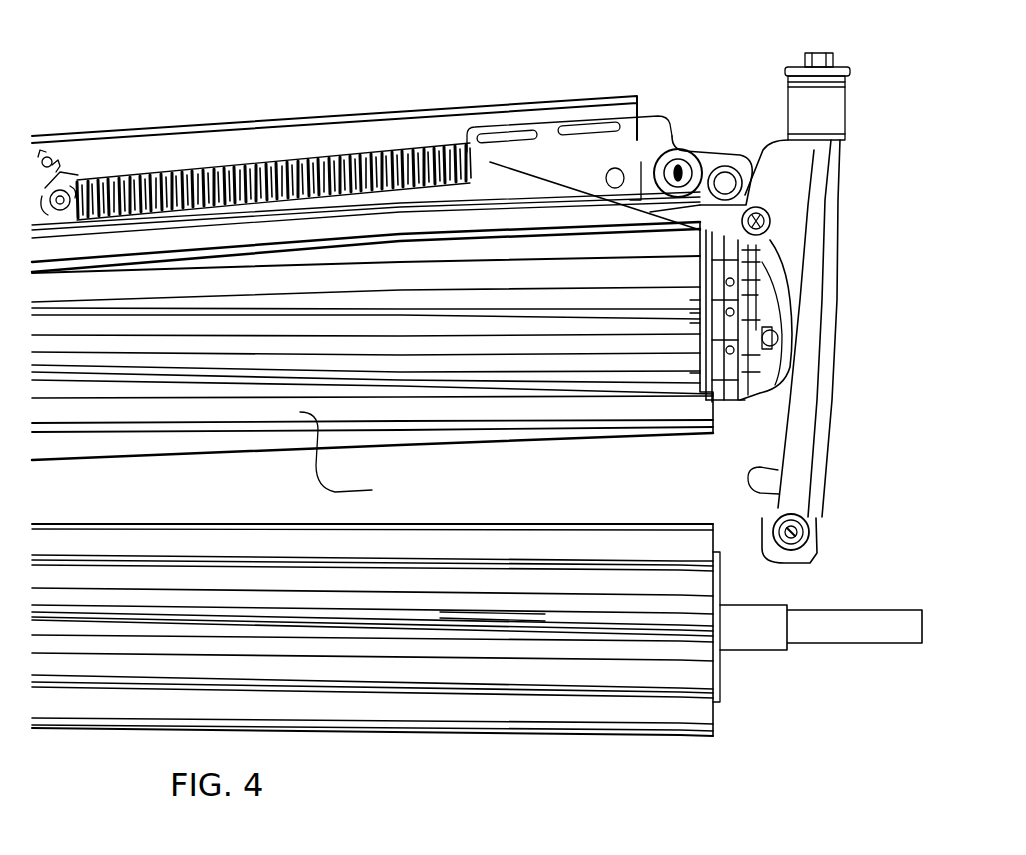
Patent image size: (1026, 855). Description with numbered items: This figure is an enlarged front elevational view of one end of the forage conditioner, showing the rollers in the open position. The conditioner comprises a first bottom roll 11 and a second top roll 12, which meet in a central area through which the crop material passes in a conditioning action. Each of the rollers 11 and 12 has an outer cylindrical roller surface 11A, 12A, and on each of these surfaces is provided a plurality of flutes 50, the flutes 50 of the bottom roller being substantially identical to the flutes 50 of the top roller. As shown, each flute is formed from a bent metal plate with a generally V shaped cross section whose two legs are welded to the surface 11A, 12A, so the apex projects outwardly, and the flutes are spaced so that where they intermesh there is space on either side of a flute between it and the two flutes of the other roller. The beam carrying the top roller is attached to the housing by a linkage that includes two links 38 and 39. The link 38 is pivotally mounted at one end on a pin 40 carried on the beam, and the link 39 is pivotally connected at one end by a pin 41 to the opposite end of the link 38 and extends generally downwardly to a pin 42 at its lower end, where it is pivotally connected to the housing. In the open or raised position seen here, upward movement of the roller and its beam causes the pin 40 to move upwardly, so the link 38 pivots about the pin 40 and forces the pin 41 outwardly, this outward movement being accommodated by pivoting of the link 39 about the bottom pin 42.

The first bottom roll 11 is at (532, 677).
The outer cylindrical roller surface 11A is at (545, 618).
The second top roll 12 is at (458, 371).
The outer cylindrical roller surface 12A is at (567, 346).
The link 38 is at (723, 162).
The link 39 is at (808, 206).
The pin 40 is at (678, 150).
The pin 41 is at (771, 220).
The pin 42 is at (808, 521).
The flutes 50 is at (372, 488).